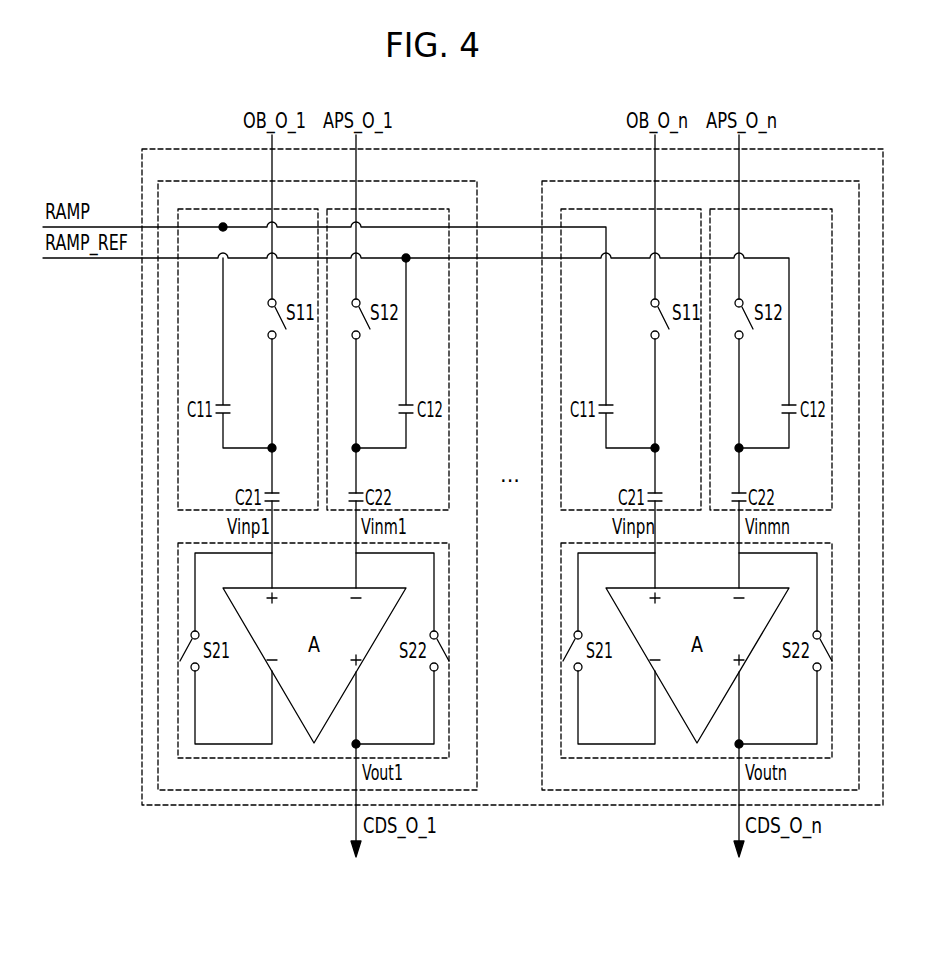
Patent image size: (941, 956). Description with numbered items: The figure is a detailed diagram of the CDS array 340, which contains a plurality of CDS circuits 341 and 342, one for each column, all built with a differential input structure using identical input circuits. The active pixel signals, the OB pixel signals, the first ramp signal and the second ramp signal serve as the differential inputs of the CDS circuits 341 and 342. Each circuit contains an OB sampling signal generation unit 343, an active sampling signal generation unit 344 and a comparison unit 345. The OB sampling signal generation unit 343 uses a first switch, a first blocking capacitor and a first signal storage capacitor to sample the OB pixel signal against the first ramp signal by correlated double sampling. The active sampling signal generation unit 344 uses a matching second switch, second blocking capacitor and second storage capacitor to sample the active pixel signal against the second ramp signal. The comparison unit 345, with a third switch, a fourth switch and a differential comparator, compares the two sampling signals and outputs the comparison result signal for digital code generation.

The CDS array 340 is at (842, 149).
The CDS circuit 341 is at (440, 181).
The CDS circuit 342 is at (825, 181).
The OB sampling signal generation unit 343 is at (278, 209).
The active sampling signal generation unit 344 is at (412, 209).
The comparison unit 345 is at (413, 543).